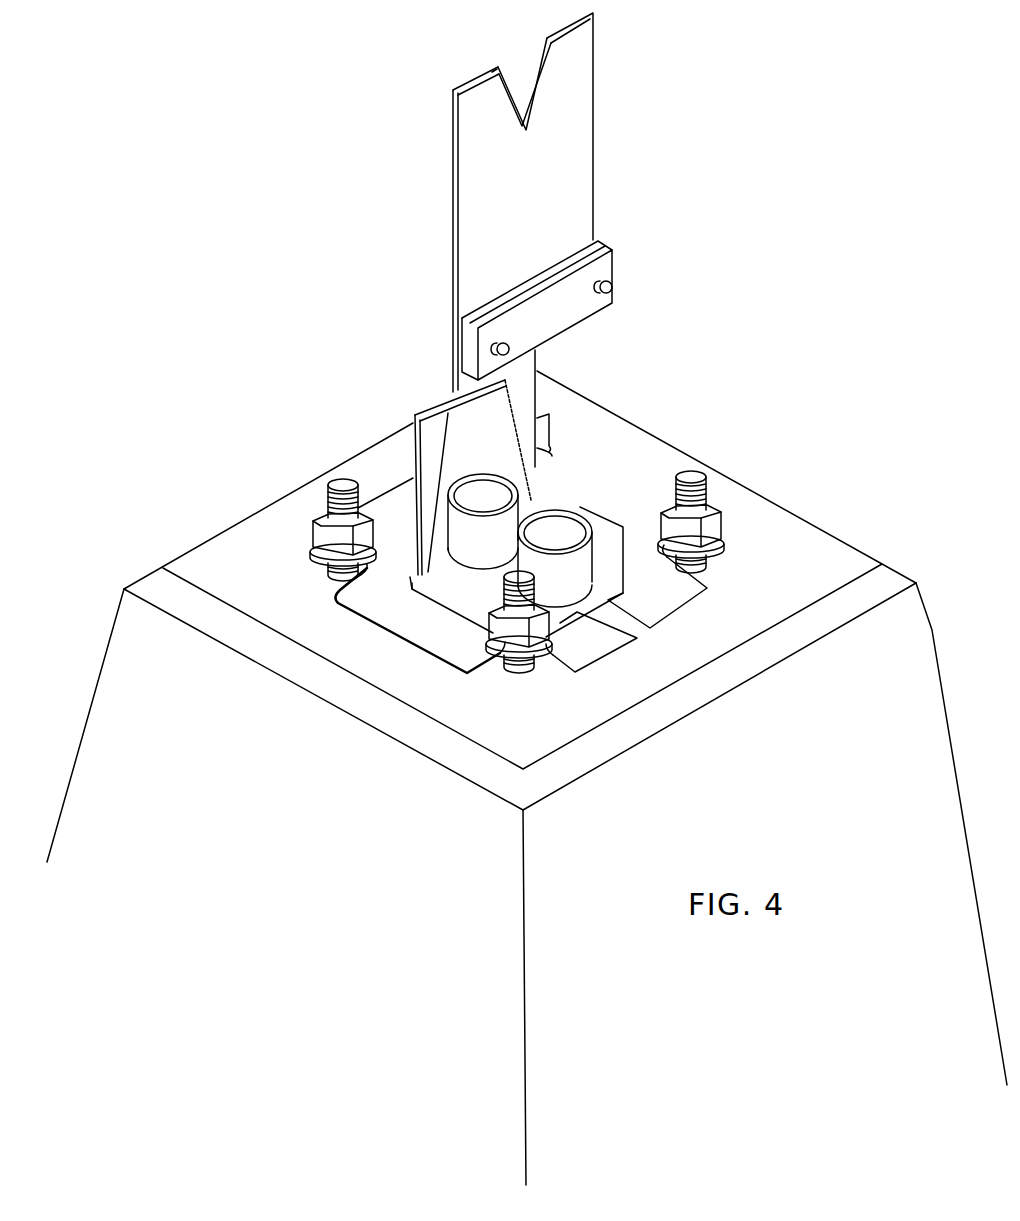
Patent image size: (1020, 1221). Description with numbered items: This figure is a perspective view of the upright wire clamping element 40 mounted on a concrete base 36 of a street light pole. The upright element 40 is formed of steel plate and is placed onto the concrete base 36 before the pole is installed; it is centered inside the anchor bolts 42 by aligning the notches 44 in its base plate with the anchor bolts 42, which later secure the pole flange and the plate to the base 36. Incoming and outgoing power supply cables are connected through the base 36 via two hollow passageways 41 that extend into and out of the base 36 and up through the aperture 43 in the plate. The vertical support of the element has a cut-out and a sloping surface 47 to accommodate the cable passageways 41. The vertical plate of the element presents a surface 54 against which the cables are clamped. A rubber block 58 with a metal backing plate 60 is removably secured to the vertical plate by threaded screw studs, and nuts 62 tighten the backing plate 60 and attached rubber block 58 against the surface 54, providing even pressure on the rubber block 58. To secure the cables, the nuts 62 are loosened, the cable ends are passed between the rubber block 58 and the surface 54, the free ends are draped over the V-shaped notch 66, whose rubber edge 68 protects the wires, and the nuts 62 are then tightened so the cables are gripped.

The concrete base 36 is at (292, 930).
The upright element 40 is at (513, 201).
The passageways 41 is at (493, 495).
The anchor bolts 42 is at (330, 482).
The aperture 43 is at (468, 600).
The notches 44 is at (330, 580).
The sloping surface 47 is at (467, 438).
The surface 54 is at (510, 201).
The rubber block 58 is at (598, 242).
The metal backing plate 60 is at (606, 265).
The nuts 62 is at (612, 289).
The V-shaped notch 66 is at (516, 52).
The rubber edge 68 is at (500, 88).